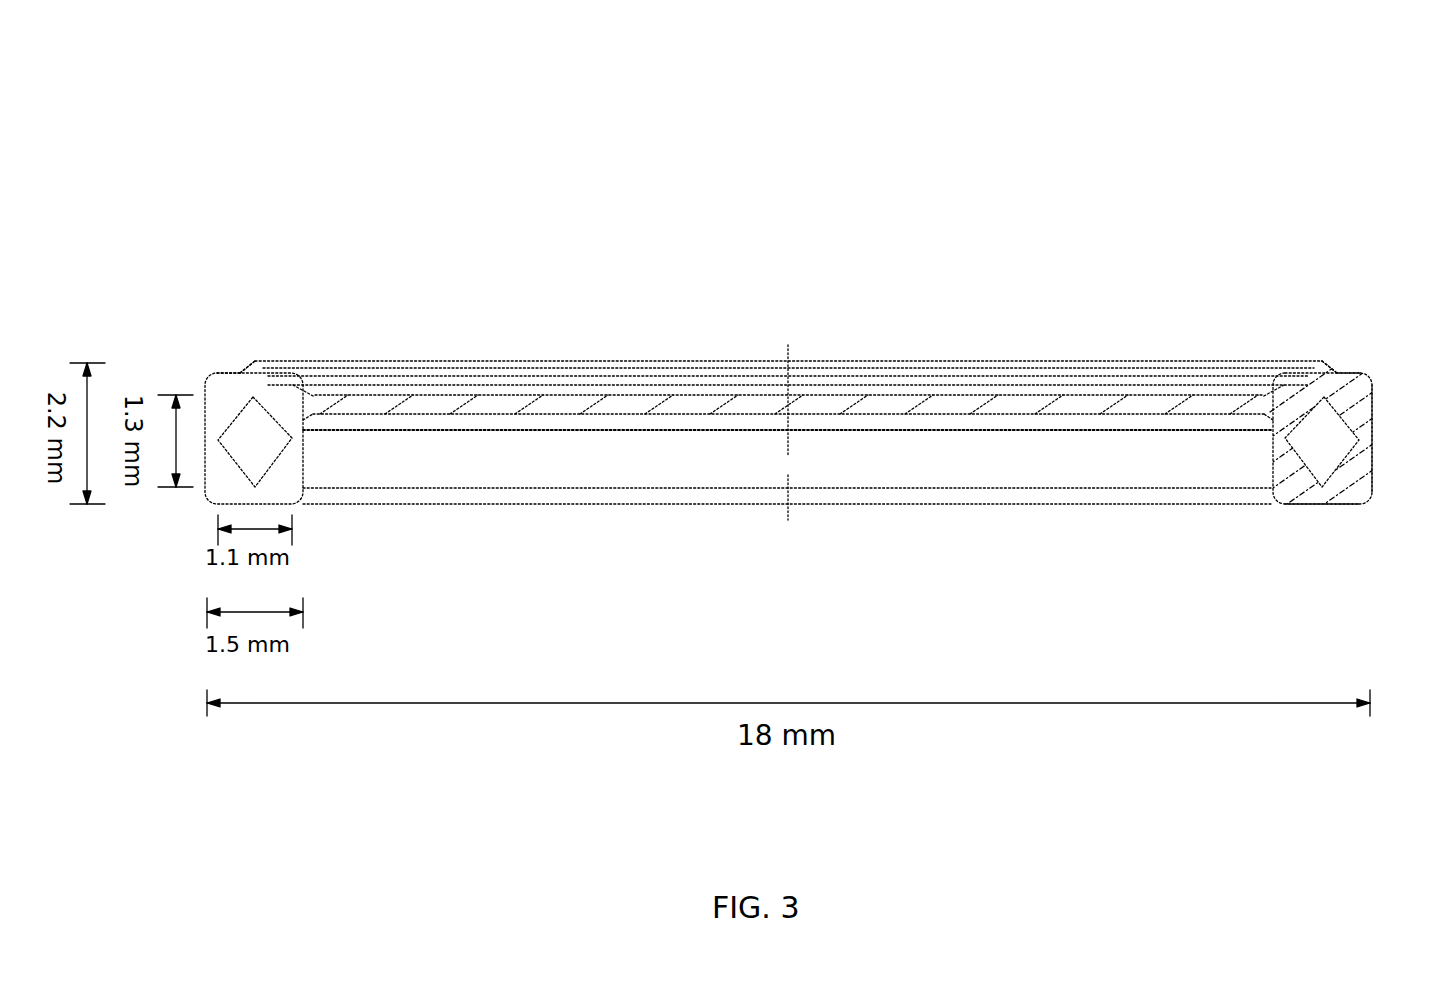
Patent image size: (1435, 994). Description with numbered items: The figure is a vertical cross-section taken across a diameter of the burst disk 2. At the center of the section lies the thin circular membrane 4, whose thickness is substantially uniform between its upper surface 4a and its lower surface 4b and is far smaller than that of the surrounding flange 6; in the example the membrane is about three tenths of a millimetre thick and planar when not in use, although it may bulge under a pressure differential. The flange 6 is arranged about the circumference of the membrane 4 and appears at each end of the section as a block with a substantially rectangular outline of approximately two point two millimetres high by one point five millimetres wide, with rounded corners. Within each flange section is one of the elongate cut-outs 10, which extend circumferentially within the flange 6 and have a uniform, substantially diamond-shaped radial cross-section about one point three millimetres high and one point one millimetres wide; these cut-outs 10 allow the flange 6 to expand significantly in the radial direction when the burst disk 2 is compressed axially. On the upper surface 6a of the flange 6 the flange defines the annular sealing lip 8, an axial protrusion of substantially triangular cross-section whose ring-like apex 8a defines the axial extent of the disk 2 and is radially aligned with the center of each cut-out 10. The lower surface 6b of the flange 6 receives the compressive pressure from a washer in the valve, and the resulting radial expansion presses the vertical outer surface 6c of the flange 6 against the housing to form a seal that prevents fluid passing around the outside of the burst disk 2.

The burst disk 2 is at (1183, 155).
The membrane 4 is at (880, 405).
The upper surface 4a is at (1103, 397).
The lower surface 4b is at (952, 415).
The flange 6 is at (1285, 475).
The upper surface 6a is at (1340, 377).
The lower surface 6b is at (1313, 504).
The vertical outer surface 6c is at (1371, 463).
The sealing lip 8 is at (250, 371).
The apex 8a is at (255, 360).
The cut-outs 10 is at (1322, 462).